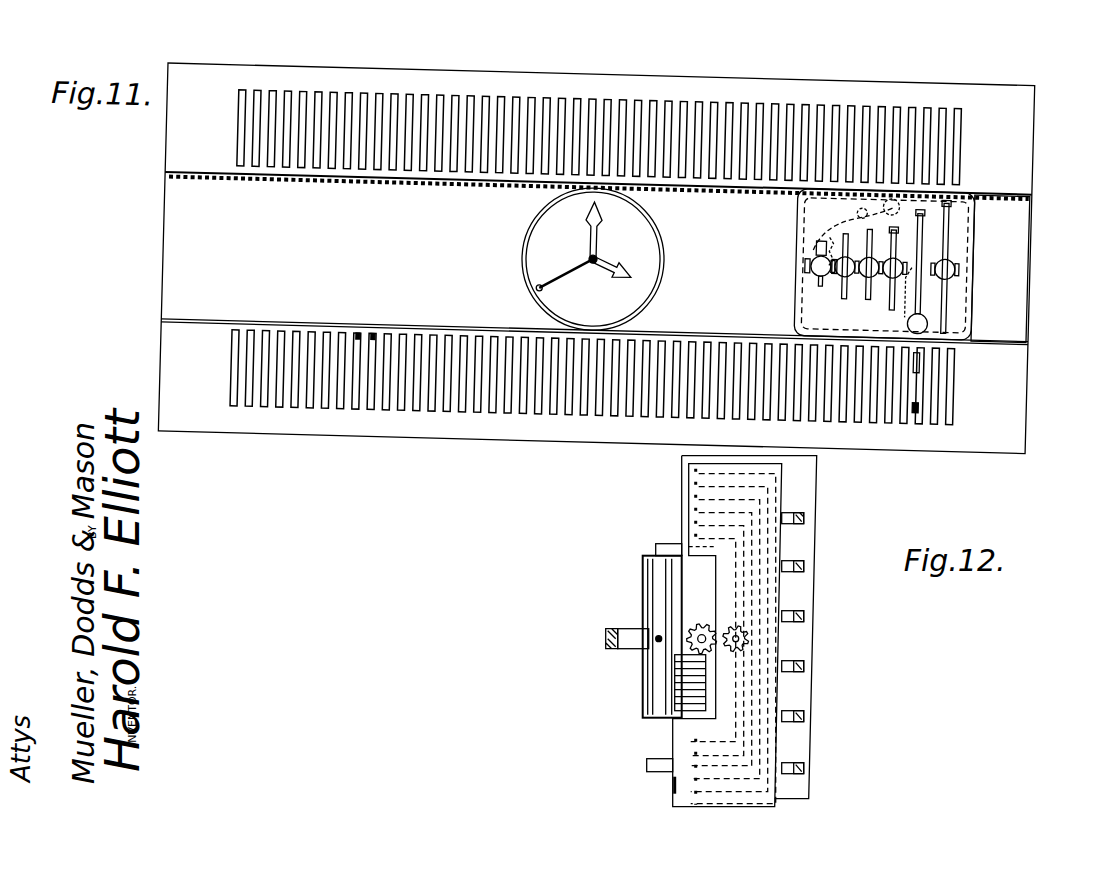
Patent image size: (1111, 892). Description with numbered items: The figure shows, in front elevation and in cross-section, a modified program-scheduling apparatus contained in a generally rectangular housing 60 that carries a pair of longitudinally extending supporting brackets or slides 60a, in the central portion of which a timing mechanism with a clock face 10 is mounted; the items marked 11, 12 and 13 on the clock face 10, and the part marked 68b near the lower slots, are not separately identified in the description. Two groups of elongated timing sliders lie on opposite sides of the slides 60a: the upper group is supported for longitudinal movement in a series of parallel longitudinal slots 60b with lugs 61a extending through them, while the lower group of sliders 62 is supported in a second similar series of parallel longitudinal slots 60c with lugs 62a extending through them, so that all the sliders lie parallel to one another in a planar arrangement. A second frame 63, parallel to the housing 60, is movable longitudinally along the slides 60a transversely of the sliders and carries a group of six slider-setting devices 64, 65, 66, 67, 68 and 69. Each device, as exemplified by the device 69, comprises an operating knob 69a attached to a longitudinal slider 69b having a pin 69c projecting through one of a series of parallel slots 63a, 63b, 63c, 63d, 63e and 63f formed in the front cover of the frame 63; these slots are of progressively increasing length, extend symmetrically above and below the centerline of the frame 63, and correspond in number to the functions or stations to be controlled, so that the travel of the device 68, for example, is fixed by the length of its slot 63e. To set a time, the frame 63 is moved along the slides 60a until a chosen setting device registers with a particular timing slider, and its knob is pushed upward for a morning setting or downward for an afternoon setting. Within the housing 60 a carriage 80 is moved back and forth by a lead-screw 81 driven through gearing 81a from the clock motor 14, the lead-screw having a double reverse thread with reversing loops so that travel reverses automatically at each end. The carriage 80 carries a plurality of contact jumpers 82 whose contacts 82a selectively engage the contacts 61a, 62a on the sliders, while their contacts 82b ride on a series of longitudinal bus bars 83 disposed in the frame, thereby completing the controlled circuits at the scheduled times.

In FIG. 11, the housing 60 is at (1018, 104).
In FIG. 11, the supporting slides 60a is at (1008, 154).
In FIG. 12, the supporting slides 60a is at (683, 588).
In FIG. 11, the longitudinal slots 60b is at (313, 80).
In FIG. 11, the longitudinal slots 60c is at (362, 396).
In FIG. 11, the lugs 62a is at (372, 320).
In FIG. 12, the lugs 62a is at (648, 766).
In FIG. 11, the pin extension 68b is at (920, 345).
In FIG. 11, the clock face 10 is at (640, 221).
In FIG. 11, the minute hand 11 is at (621, 257).
In FIG. 11, the hour hand 12 is at (585, 202).
In FIG. 11, the alarm hand 13 is at (552, 256).
In FIG. 11, the second frame 63 is at (960, 220).
In FIG. 11, the parallel slot 63a is at (814, 232).
In FIG. 11, the parallel slot 63b is at (826, 219).
In FIG. 11, the parallel slot 63c is at (864, 202).
In FIG. 11, the parallel slot 63d is at (891, 203).
In FIG. 11, the parallel slot 63e is at (917, 186).
In FIG. 11, the parallel slot 63f is at (946, 180).
In FIG. 11, the slider-setting device 64 is at (808, 248).
In FIG. 11, the slider-setting device 65 is at (841, 254).
In FIG. 11, the slider-setting device 66 is at (865, 262).
In FIG. 11, the slider-setting device 67 is at (889, 267).
In FIG. 11, the slider-setting device 68 is at (927, 296).
In FIG. 11, the slider-setting device 69 is at (953, 241).
In FIG. 12, the slider-setting device 69 is at (648, 630).
In FIG. 11, the gearing 81a is at (403, 171).
In FIG. 12, the gearing 81a is at (727, 657).
In FIG. 12, the carriage 80 is at (786, 601).
In FIG. 12, the lead-screw 81 is at (760, 646).
In FIG. 12, the contact jumpers 82 is at (765, 553).
In FIG. 12, the contacts 82a is at (700, 492).
In FIG. 12, the contacts 82b is at (790, 519).
In FIG. 12, the bus bars 83 is at (806, 520).
In FIG. 12, the lugs 61a is at (657, 551).
In FIG. 12, the operating knob 69a is at (607, 645).
In FIG. 12, the longitudinal slider 69b is at (688, 673).
In FIG. 12, the pin 69c is at (612, 633).
In FIG. 12, the clock motor 14 is at (688, 675).
In FIG. 12, the timing sliders 62 is at (674, 785).